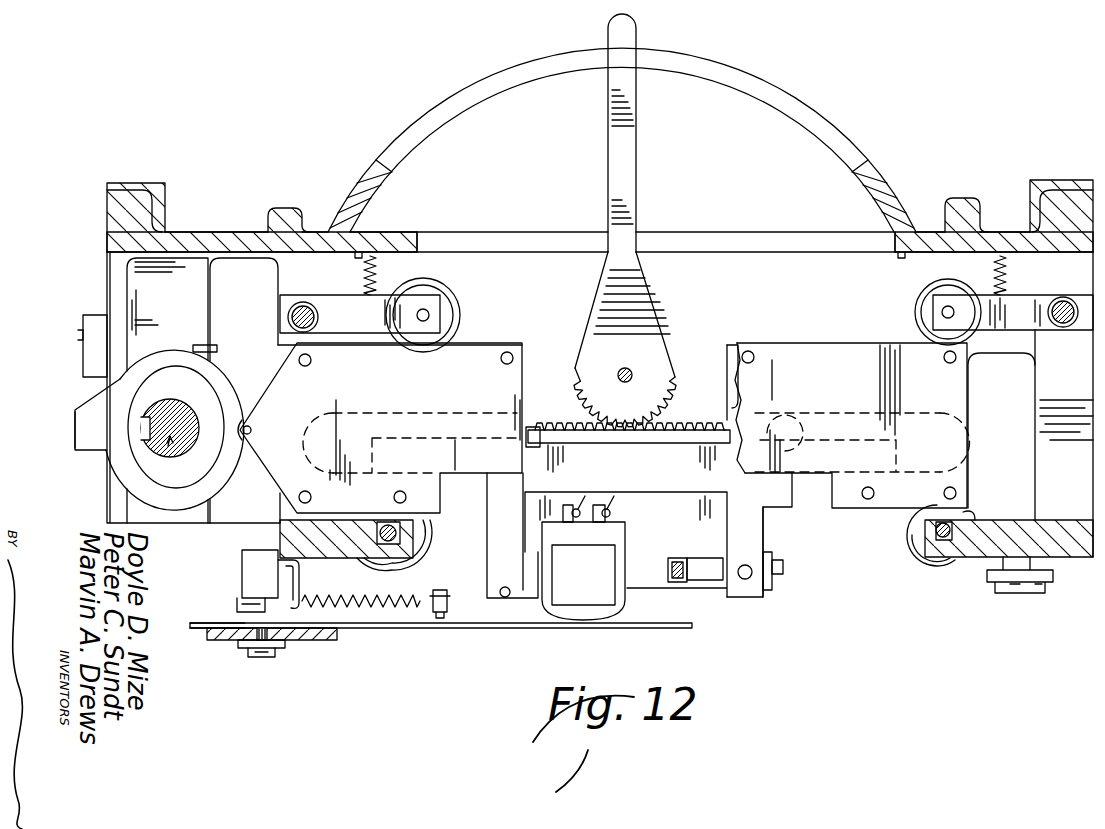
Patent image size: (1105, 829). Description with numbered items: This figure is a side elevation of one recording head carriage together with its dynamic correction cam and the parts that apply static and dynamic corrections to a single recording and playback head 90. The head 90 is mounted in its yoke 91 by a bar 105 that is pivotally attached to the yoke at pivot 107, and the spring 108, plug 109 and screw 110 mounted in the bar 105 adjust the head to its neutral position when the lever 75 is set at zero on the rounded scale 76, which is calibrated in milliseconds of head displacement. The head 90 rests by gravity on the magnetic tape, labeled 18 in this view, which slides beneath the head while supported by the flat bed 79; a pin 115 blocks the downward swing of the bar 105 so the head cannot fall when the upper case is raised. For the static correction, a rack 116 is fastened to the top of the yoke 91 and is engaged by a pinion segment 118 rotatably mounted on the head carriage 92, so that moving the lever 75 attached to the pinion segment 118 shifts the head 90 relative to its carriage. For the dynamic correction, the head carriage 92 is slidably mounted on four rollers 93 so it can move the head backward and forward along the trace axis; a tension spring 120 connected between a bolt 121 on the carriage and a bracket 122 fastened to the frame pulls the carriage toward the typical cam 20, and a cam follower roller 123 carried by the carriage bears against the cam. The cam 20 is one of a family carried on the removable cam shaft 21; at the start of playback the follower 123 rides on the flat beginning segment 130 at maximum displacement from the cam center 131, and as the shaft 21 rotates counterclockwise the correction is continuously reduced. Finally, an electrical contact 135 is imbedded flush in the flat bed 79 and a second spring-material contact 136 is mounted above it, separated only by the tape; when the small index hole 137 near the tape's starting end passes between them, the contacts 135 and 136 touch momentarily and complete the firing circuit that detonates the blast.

The strip bar 18 is at (378, 632).
The cam 20 is at (78, 398).
The cam shaft 21 is at (147, 413).
The lever 75 is at (640, 30).
The scale 76 is at (462, 82).
The flat bed 79 is at (330, 642).
The recording and playback head 90 is at (622, 612).
The yoke 91 is at (794, 512).
The head carriage 92 is at (830, 386).
The rollers 93 is at (455, 312).
The bar 105 is at (665, 590).
The pivot 107 is at (748, 582).
The spring 108 is at (677, 560).
The plug 109 is at (707, 565).
The screw 110 is at (786, 567).
The pin 115 is at (506, 600).
The rack 116 is at (680, 420).
The pinion segment 118 is at (575, 397).
The tension spring 120 is at (430, 632).
The bolt 121 is at (441, 560).
The bracket 122 is at (302, 578).
The cam follower roller 123 is at (253, 430).
The flat beginning segment 130 is at (72, 430).
The cam center 131 is at (160, 455).
The electrical contact 135 is at (270, 658).
The second electrical contact 136 is at (252, 617).
The hole 137 is at (215, 618).